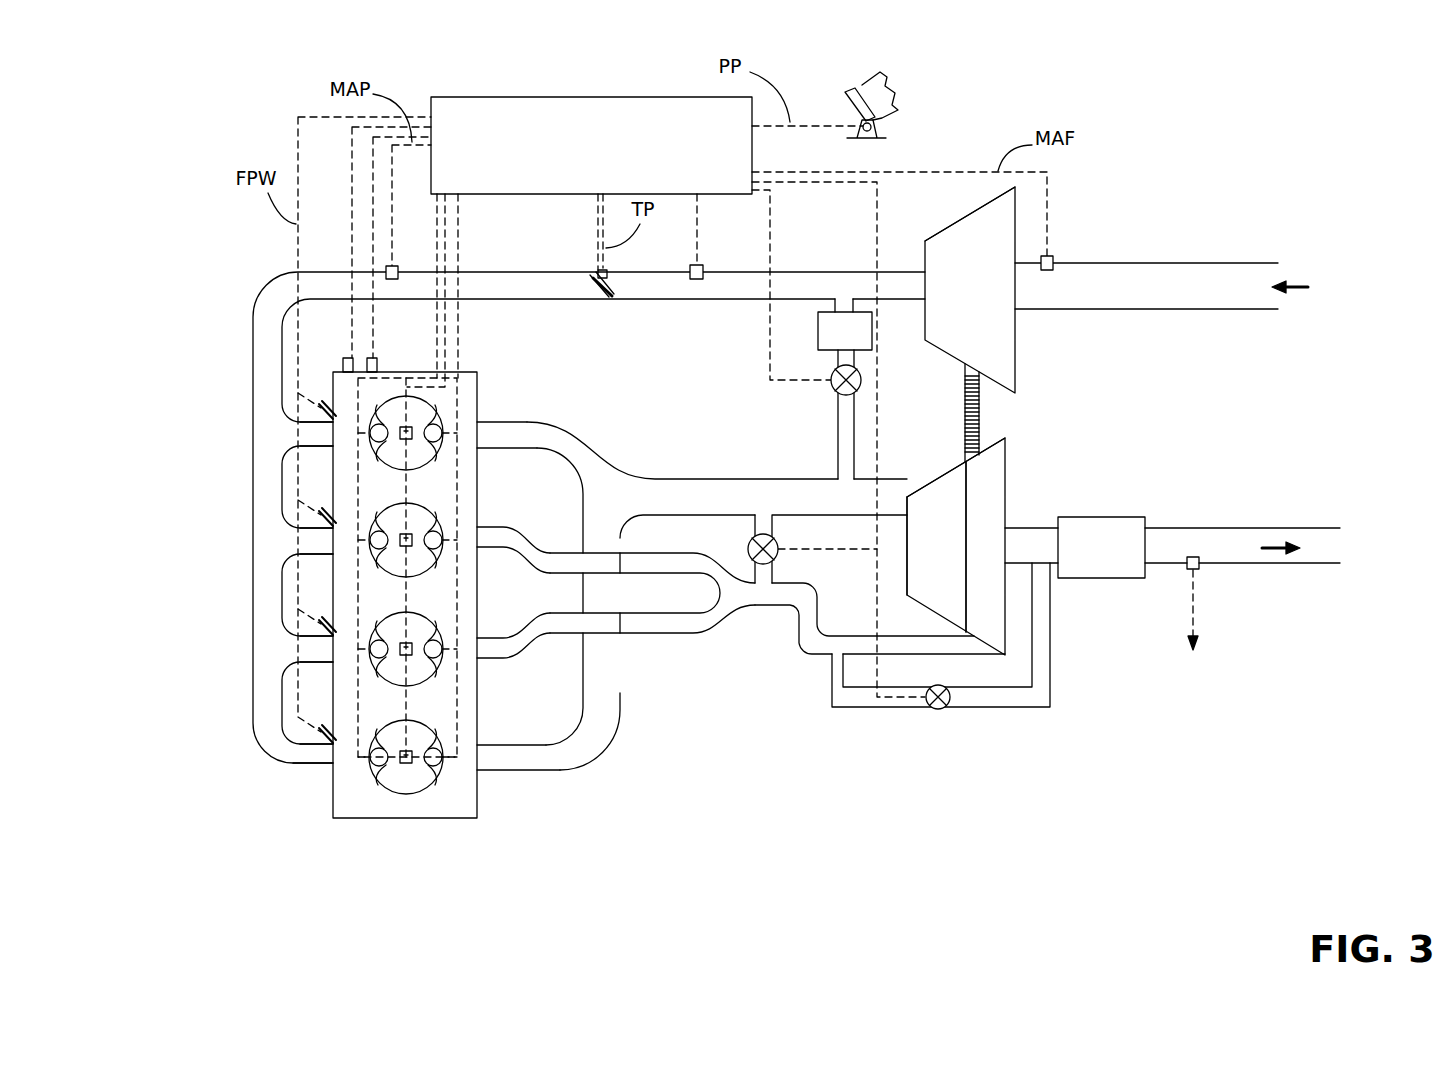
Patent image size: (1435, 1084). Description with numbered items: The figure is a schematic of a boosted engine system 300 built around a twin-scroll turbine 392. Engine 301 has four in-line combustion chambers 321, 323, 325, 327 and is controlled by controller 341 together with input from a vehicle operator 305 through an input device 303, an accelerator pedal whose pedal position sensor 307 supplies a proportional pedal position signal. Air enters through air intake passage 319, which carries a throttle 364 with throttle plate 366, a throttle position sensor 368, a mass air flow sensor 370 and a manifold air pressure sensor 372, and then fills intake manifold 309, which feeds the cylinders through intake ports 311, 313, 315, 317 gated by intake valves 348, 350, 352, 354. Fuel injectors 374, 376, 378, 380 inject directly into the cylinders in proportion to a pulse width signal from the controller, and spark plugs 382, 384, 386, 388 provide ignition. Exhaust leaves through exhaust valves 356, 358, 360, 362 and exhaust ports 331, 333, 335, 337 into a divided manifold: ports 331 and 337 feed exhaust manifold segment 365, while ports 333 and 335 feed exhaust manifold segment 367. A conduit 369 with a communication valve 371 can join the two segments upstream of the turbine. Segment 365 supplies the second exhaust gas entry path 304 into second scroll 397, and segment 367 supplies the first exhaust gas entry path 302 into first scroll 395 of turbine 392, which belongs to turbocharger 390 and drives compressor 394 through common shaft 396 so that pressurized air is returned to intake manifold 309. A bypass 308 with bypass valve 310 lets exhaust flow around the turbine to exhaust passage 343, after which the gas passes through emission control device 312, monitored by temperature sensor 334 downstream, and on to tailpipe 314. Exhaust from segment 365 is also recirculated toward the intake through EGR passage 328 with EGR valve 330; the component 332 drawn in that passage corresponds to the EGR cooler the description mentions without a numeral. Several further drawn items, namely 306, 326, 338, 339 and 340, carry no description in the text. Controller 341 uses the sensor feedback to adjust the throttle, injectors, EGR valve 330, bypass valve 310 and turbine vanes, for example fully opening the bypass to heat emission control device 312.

The boosted engine system 300 is at (1297, 92).
The engine 301 is at (155, 447).
The first exhaust gas entry path 302 is at (888, 620).
The input device 303 is at (848, 104).
The second exhaust gas entry path 304 is at (874, 493).
The vehicle operator 305 is at (890, 93).
The turbine bypass passage 306 is at (848, 708).
The pedal position sensor 307 is at (890, 133).
The bypass 308 is at (792, 610).
The intake manifold 309 is at (256, 332).
The bypass valve 310 is at (942, 710).
The intake port 311 is at (333, 437).
The emission control device 312 is at (1101, 547).
The intake port 313 is at (333, 545).
The tailpipe 314 is at (1246, 545).
The intake port 315 is at (333, 652).
The intake port 317 is at (333, 767).
The air intake passage 319 is at (1184, 286).
The combustion chamber 321 is at (431, 460).
The combustion chamber 323 is at (431, 567).
The combustion chamber 325 is at (431, 674).
The EGR passage 326 is at (769, 434).
The combustion chamber 327 is at (431, 782).
The EGR passage 328 is at (836, 474).
The EGR valve 330 is at (833, 372).
The exhaust port 331 is at (478, 437).
The EGR cooler 332 is at (845, 331).
The exhaust port 333 is at (478, 527).
The temperature sensor 334 is at (1186, 570).
The exhaust port 335 is at (478, 655).
The exhaust port 337 is at (478, 763).
The engine sensor 338 is at (374, 361).
The throttle inlet pressure sensor 339 is at (704, 265).
The engine sensor 340 is at (345, 361).
The controller 341 is at (591, 145).
The exhaust passage 343 is at (1031, 545).
The intake valve 348 is at (383, 421).
The intake valve 350 is at (383, 528).
The intake valve 352 is at (383, 636).
The intake valve 354 is at (383, 744).
The exhaust valve 356 is at (437, 430).
The exhaust valve 358 is at (437, 528).
The exhaust valve 360 is at (437, 636).
The exhaust valve 362 is at (437, 744).
The throttle 364 is at (597, 292).
The exhaust manifold segment 365 is at (662, 478).
The throttle plate 366 is at (614, 297).
The exhaust manifold segment 367 is at (692, 636).
The throttle position sensor 368 is at (612, 275).
The conduit 369 is at (783, 578).
The mass air flow sensor 370 is at (1056, 262).
The communication valve 371 is at (781, 552).
The manifold air pressure sensor 372 is at (399, 268).
The fuel injector 374 is at (329, 408).
The fuel injector 376 is at (329, 516).
The fuel injector 378 is at (329, 624).
The fuel injector 380 is at (329, 732).
The spark plug 382 is at (381, 460).
The spark plug 384 is at (381, 567).
The spark plug 386 is at (381, 674).
The spark plug 388 is at (381, 780).
The turbocharger 390 is at (1008, 414).
The turbine 392 is at (1006, 516).
The compressor 394 is at (970, 290).
The first scroll 395 is at (982, 547).
The common shaft 396 is at (963, 394).
The second scroll 397 is at (929, 546).